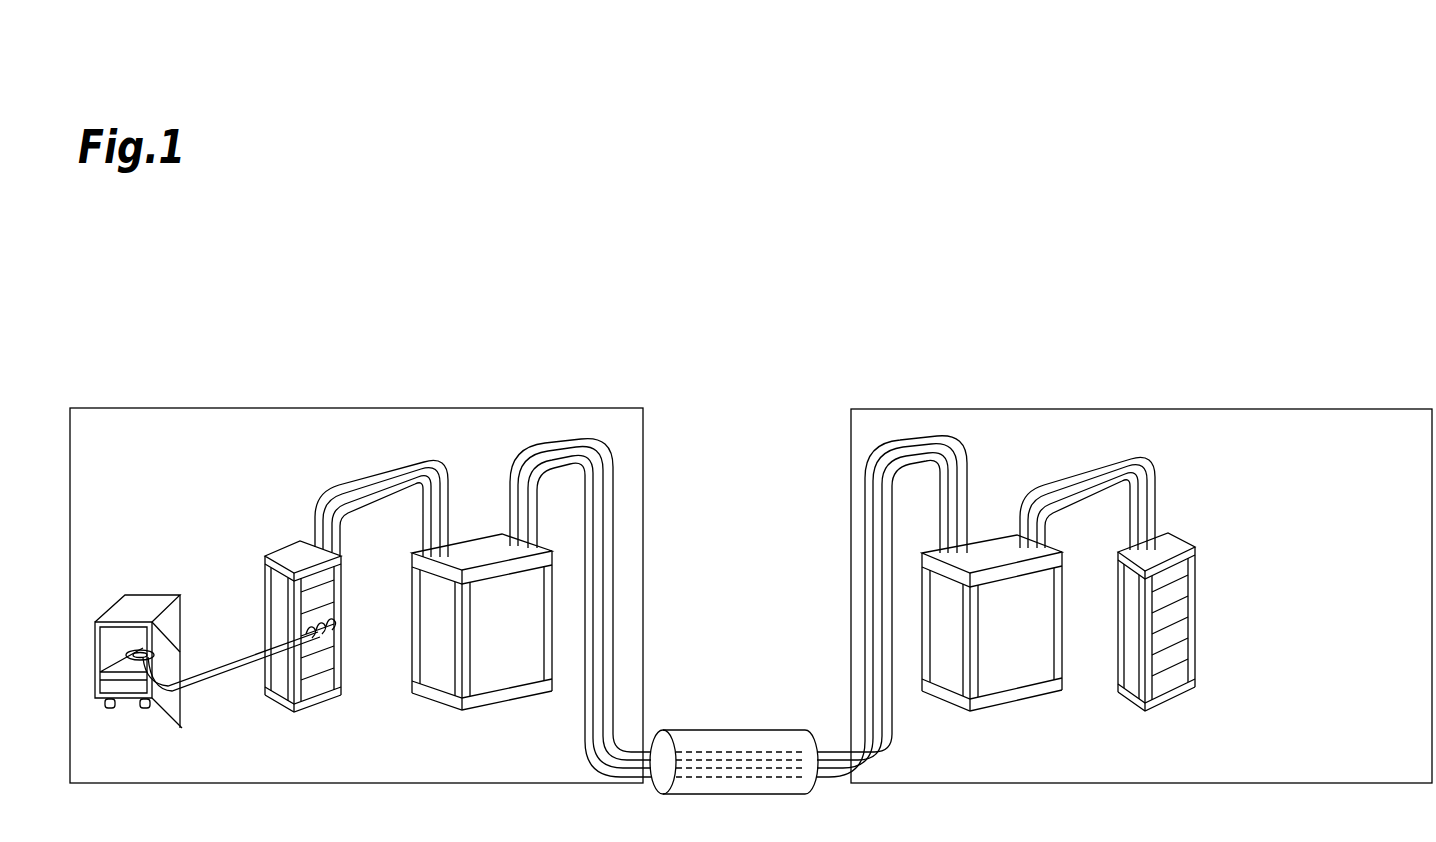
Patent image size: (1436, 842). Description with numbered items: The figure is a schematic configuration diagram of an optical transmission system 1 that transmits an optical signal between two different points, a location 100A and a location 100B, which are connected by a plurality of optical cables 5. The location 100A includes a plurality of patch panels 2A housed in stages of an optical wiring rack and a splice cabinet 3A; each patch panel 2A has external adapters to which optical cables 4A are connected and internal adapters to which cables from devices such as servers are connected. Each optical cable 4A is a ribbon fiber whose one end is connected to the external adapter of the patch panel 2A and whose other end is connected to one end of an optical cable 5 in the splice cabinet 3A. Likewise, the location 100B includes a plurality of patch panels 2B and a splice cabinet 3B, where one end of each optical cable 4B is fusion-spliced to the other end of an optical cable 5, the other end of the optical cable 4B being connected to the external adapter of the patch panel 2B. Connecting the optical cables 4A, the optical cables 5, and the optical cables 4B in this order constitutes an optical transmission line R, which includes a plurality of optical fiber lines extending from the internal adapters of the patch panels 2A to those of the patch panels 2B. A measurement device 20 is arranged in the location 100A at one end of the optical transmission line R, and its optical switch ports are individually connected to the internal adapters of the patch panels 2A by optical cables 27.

The optical transmission system 1 is at (1138, 289).
The location 100A is at (525, 397).
The location 100B is at (1324, 397).
The measurement device 20 is at (143, 589).
The patch panel 2A is at (345, 602).
The patch panel 2B is at (1199, 600).
The optical cables 27 is at (338, 642).
The splice cabinet 3A is at (478, 534).
The splice cabinet 3B is at (990, 532).
The optical cables 4A is at (378, 470).
The optical cables 4B is at (1078, 472).
The optical cables 5 is at (843, 775).
The optical transmission line R is at (735, 713).